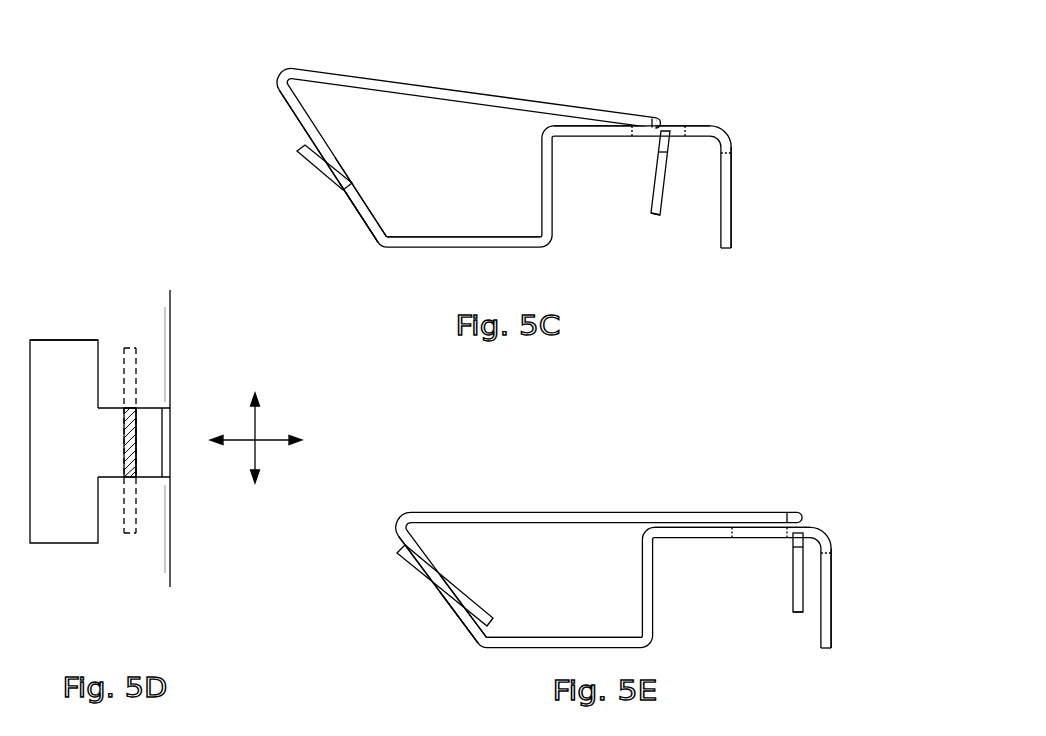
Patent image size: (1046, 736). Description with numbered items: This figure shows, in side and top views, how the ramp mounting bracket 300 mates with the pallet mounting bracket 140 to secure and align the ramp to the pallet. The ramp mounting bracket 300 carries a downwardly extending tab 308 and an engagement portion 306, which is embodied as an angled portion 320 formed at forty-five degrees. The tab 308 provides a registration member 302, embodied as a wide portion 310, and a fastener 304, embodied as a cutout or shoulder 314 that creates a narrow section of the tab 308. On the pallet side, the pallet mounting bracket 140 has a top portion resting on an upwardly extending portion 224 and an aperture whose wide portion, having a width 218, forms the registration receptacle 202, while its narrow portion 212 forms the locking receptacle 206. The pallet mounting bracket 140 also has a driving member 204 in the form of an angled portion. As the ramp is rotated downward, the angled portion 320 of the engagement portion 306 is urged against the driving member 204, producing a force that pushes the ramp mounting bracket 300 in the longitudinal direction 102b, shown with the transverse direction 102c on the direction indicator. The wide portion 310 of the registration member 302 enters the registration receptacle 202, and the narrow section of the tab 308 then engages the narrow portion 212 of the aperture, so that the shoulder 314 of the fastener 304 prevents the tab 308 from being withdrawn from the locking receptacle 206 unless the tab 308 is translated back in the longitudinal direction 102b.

In FIG. 5C, the ramp mounting bracket 300 is at (506, 57).
In FIG. 5E, the ramp mounting bracket 300 is at (548, 478).
In FIG. 5C, the registration member 302 is at (633, 192).
In FIG. 5E, the registration member 302 is at (775, 618).
In FIG. 5C, the fastener 304 is at (710, 108).
In FIG. 5E, the fastener 304 is at (762, 551).
In FIG. 5C, the engagement portion 306 is at (257, 134).
In FIG. 5E, the engagement portion 306 is at (489, 581).
In FIG. 5C, the tab 308 is at (660, 116).
In FIG. 5D, the tab 308 is at (124, 440).
In FIG. 5E, the tab 308 is at (795, 510).
In FIG. 5C, the wide portion 310 is at (655, 217).
In FIG. 5E, the wide portion 310 is at (797, 590).
In FIG. 5C, the shoulder 314 is at (666, 153).
In FIG. 5D, the shoulder 314 is at (127, 408).
In FIG. 5E, the shoulder 314 is at (797, 545).
In FIG. 5C, the angled portion 320 is at (327, 146).
In FIG. 5E, the angled portion 320 is at (443, 573).
In FIG. 5C, the pallet mounting bracket 140 is at (460, 214).
In FIG. 5E, the pallet mounting bracket 140 is at (570, 596).
In FIG. 5D, the registration receptacle 202 is at (69, 574).
In FIG. 5C, the driving member 204 is at (282, 202).
In FIG. 5E, the driving member 204 is at (393, 590).
In FIG. 5C, the locking receptacle 206 is at (712, 159).
In FIG. 5D, the locking receptacle 206 is at (143, 499).
In FIG. 5E, the locking receptacle 206 is at (847, 521).
In FIG. 5D, the narrow portion 212 is at (152, 408).
In FIG. 5D, the width 218 is at (60, 340).
In FIG. 5C, the upwardly extending portion 224 is at (367, 226).
In FIG. 5E, the upwardly extending portion 224 is at (452, 613).
In FIG. 5D, the longitudinal direction 102b is at (267, 443).
In FIG. 5D, the direction 102c is at (257, 423).